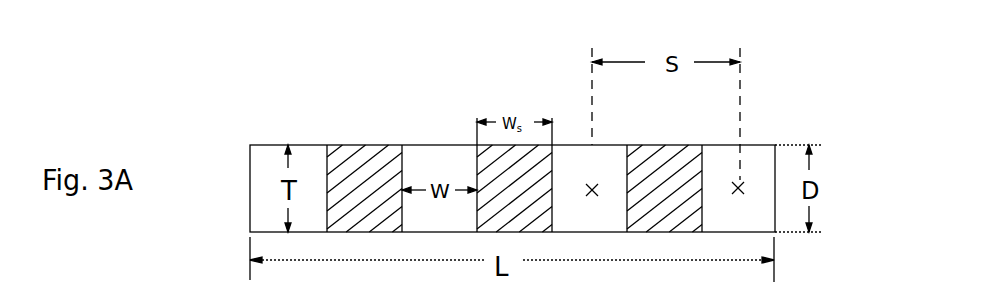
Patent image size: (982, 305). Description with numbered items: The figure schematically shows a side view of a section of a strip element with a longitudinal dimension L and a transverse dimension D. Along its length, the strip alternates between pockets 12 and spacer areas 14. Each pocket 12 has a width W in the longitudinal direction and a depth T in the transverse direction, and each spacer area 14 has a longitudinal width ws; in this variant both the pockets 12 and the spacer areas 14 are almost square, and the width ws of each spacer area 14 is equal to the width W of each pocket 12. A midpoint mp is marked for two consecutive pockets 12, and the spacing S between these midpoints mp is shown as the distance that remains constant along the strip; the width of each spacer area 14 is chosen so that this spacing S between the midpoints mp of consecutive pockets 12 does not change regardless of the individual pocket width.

The pocket 12 is at (268, 152).
The spacer area 14 is at (360, 152).
The midpoint mp is at (592, 190).